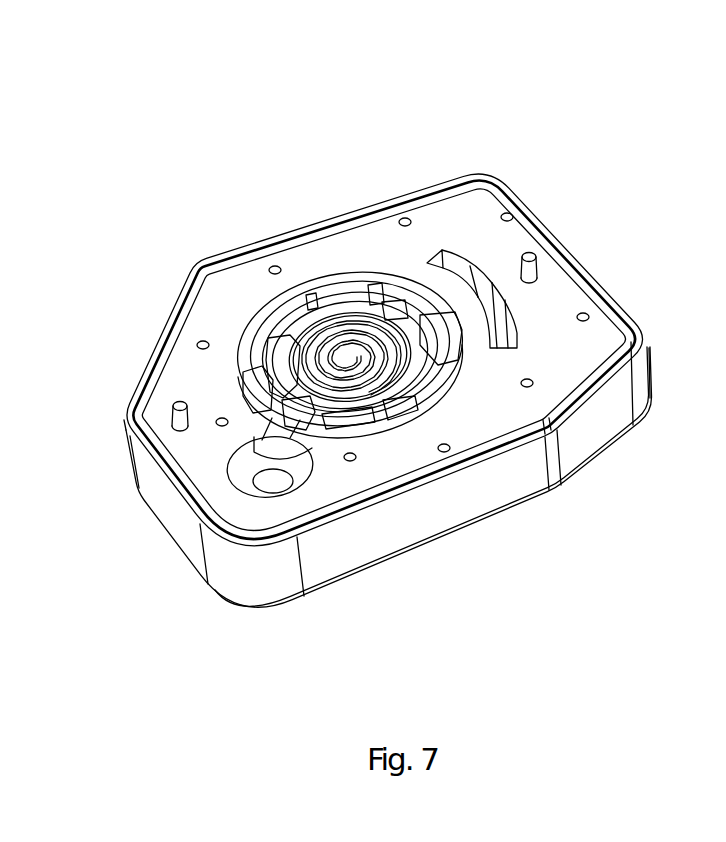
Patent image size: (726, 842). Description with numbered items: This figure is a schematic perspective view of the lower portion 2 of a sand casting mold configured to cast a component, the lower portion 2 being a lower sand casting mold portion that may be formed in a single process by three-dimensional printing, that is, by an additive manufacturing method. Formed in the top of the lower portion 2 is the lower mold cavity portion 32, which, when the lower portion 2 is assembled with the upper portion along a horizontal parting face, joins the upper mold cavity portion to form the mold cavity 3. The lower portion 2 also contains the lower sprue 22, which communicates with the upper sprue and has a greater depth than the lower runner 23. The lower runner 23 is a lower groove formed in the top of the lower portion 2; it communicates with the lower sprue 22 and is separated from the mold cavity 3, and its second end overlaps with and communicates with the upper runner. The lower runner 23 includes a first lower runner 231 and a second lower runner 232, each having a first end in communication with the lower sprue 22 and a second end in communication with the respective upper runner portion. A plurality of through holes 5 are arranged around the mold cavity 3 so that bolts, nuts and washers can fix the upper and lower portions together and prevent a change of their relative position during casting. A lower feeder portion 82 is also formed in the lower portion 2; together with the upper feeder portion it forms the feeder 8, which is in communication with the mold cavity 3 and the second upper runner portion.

The lower portion 2 is at (582, 126).
The lower sprue 22 is at (487, 330).
The lower runner 23 is at (576, 270).
The first lower runner 231 is at (460, 265).
The second lower runner 232 is at (497, 337).
The mold cavity 3 is at (350, 349).
The lower mold cavity portion 32 is at (310, 327).
The through holes 5 is at (200, 341).
The feeder 8 is at (252, 468).
The lower feeder portion 82 is at (189, 495).